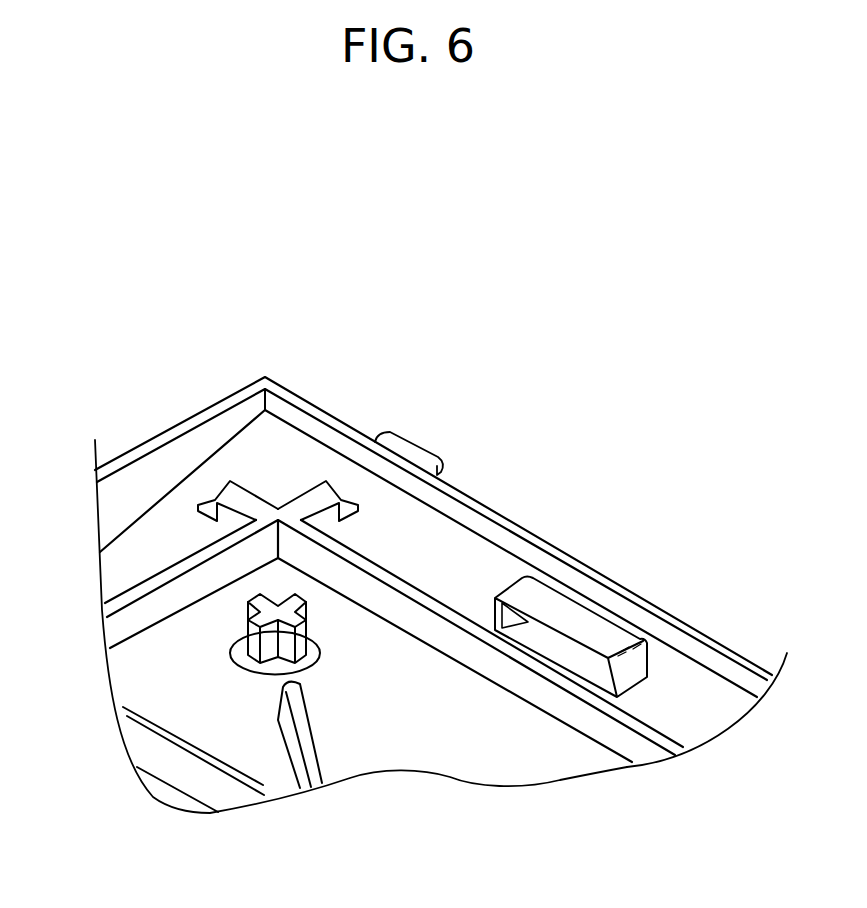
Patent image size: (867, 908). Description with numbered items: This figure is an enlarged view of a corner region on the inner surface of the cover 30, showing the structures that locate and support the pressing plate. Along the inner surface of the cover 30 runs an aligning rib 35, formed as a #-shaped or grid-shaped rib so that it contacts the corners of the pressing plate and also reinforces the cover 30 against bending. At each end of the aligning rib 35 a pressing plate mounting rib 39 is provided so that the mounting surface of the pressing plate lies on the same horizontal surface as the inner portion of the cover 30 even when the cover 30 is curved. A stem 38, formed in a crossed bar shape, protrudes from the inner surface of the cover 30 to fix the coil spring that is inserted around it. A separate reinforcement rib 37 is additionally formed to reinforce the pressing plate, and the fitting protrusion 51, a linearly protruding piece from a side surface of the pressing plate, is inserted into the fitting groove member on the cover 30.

The cover 30 is at (490, 532).
The aligning rib 35 is at (380, 600).
The reinforcement rib 37 is at (293, 752).
The stem 38 is at (247, 603).
The pressing plate mounting rib 39 is at (213, 507).
The fitting protrusion 51 is at (577, 613).